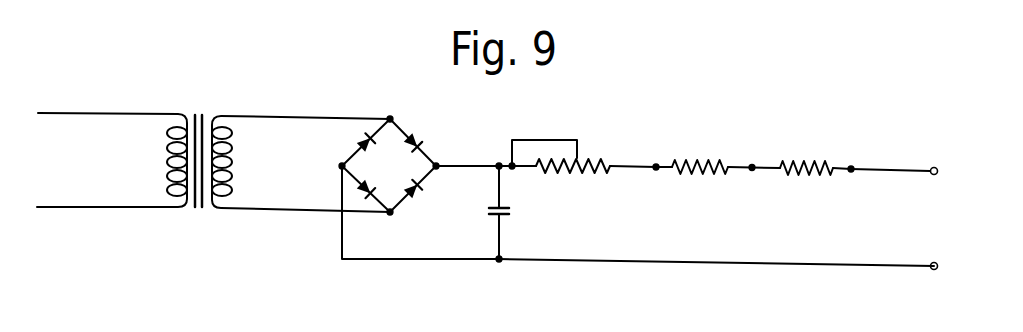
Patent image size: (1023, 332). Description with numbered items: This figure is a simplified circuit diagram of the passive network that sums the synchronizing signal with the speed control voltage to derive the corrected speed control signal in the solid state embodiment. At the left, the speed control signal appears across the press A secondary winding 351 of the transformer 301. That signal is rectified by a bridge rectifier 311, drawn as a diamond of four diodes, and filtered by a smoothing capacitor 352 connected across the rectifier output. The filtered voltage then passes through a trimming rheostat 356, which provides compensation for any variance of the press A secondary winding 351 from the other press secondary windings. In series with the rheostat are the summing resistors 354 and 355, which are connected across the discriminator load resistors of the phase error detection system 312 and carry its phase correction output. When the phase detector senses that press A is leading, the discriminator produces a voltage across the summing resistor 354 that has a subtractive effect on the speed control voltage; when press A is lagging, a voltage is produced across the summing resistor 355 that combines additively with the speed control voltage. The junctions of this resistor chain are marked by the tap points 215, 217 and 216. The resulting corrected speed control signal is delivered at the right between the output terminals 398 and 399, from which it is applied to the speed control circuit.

The transformer 301 is at (198, 111).
The press A secondary winding 351 is at (230, 165).
The bridge rectifier 311 is at (400, 174).
The smoothing capacitor 352 is at (511, 212).
The trimming rheostat 356 is at (582, 156).
The tap terminal 215 is at (656, 167).
The summing resistor 354 is at (698, 160).
The phase error detection system 312 is at (733, 119).
The tap terminal 217 is at (752, 168).
The summing resistor 355 is at (808, 163).
The tap terminal 216 is at (851, 169).
The terminal 398 is at (937, 168).
The terminal 399 is at (937, 264).